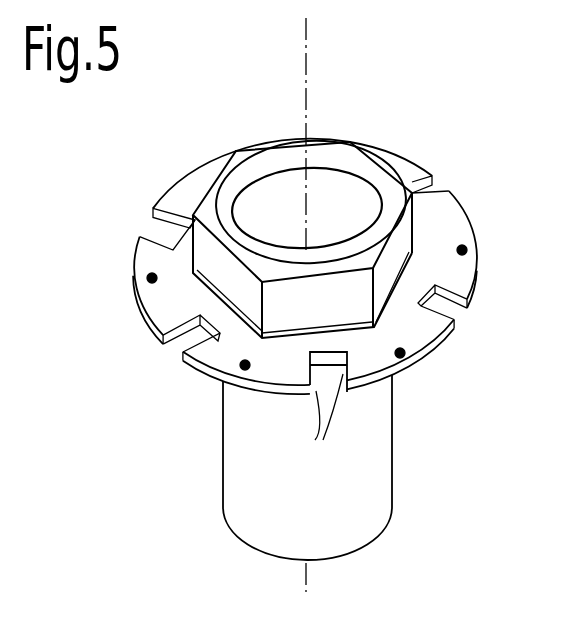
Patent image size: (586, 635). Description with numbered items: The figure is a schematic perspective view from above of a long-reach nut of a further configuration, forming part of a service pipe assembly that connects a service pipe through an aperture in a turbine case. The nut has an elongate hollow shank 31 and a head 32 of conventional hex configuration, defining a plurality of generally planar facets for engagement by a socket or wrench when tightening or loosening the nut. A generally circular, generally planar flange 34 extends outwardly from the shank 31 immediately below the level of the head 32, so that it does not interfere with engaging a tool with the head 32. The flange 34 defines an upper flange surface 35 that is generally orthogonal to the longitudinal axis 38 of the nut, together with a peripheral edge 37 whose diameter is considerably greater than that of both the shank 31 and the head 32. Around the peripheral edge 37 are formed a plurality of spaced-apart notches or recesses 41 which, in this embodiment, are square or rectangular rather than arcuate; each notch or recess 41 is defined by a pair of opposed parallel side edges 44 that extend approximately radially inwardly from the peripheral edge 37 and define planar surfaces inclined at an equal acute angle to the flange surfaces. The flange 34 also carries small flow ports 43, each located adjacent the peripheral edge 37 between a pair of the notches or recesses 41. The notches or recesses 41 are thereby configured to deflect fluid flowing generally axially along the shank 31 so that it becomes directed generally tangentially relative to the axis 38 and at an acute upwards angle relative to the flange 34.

The shank 31 is at (383, 498).
The head 32 is at (352, 141).
The flange 34 is at (451, 224).
The upper flange surface 35 is at (190, 190).
The peripheral edge 37 is at (459, 333).
The longitudinal axis 38 is at (300, 70).
The notches or recesses 41 is at (150, 232).
The flow ports 43 is at (400, 353).
The side edges 44 is at (321, 412).